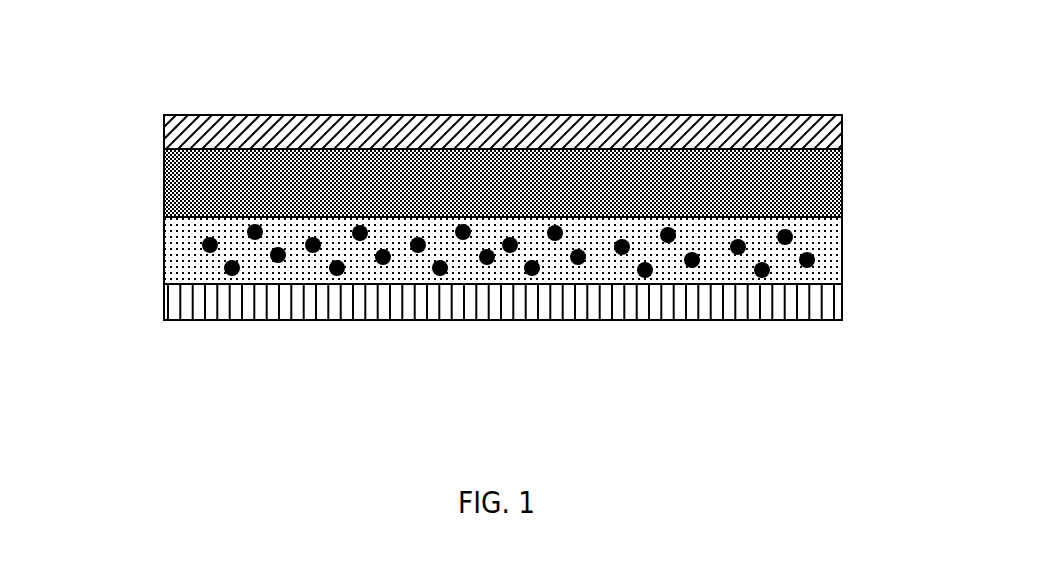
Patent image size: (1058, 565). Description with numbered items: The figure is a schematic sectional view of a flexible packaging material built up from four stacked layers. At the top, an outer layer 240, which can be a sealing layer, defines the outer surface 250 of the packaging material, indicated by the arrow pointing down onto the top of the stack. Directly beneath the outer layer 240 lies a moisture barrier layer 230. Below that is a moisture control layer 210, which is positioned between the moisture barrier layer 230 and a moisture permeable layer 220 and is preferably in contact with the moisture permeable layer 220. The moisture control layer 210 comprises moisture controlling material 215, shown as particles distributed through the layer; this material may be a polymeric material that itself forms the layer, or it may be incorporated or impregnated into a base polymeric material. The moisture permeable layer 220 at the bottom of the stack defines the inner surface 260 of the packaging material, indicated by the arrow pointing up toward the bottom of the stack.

The moisture control layer 210 is at (164, 260).
The moisture controlling material 215 is at (813, 259).
The moisture permeable layer 220 is at (842, 302).
The moisture barrier layer 230 is at (842, 175).
The outer layer 240 is at (164, 130).
The outer surface 250 is at (334, 108).
The inner surface 260 is at (346, 327).